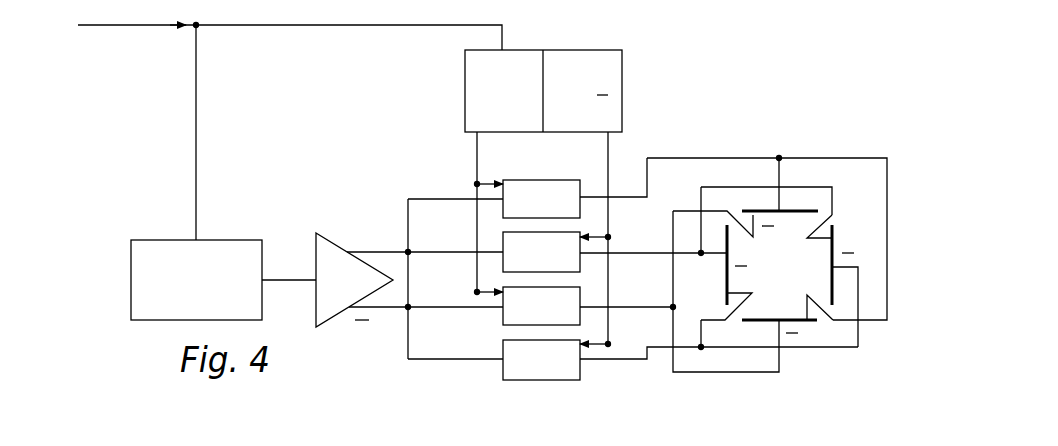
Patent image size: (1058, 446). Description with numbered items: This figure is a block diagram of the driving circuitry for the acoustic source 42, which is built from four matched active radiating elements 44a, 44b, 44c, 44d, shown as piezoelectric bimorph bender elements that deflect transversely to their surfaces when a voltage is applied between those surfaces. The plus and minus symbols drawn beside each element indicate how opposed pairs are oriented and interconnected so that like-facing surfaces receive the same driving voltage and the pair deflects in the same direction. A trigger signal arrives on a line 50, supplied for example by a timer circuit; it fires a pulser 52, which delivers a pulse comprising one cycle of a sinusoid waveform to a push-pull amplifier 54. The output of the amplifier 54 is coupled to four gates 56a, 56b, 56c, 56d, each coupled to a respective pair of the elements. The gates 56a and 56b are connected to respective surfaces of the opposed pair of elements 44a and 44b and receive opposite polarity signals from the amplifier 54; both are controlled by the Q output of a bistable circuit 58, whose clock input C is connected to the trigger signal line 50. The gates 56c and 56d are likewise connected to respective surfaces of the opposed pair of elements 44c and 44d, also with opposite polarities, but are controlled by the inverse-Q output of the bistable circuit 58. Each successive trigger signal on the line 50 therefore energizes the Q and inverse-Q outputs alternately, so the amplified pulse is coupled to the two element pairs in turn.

The acoustic source 42 is at (797, 236).
The active radiating element 44a is at (805, 210).
The active radiating element 44b is at (758, 326).
The active radiating element 44c is at (727, 290).
The active radiating element 44d is at (840, 287).
The trigger signal line 50 is at (150, 26).
The pulser 52 is at (166, 240).
The push-pull amplifier 54 is at (341, 234).
The gate 56a is at (536, 180).
The gate 56b is at (503, 316).
The gate 56c is at (503, 240).
The gate 56d is at (503, 372).
The bistable circuit 58 is at (612, 72).